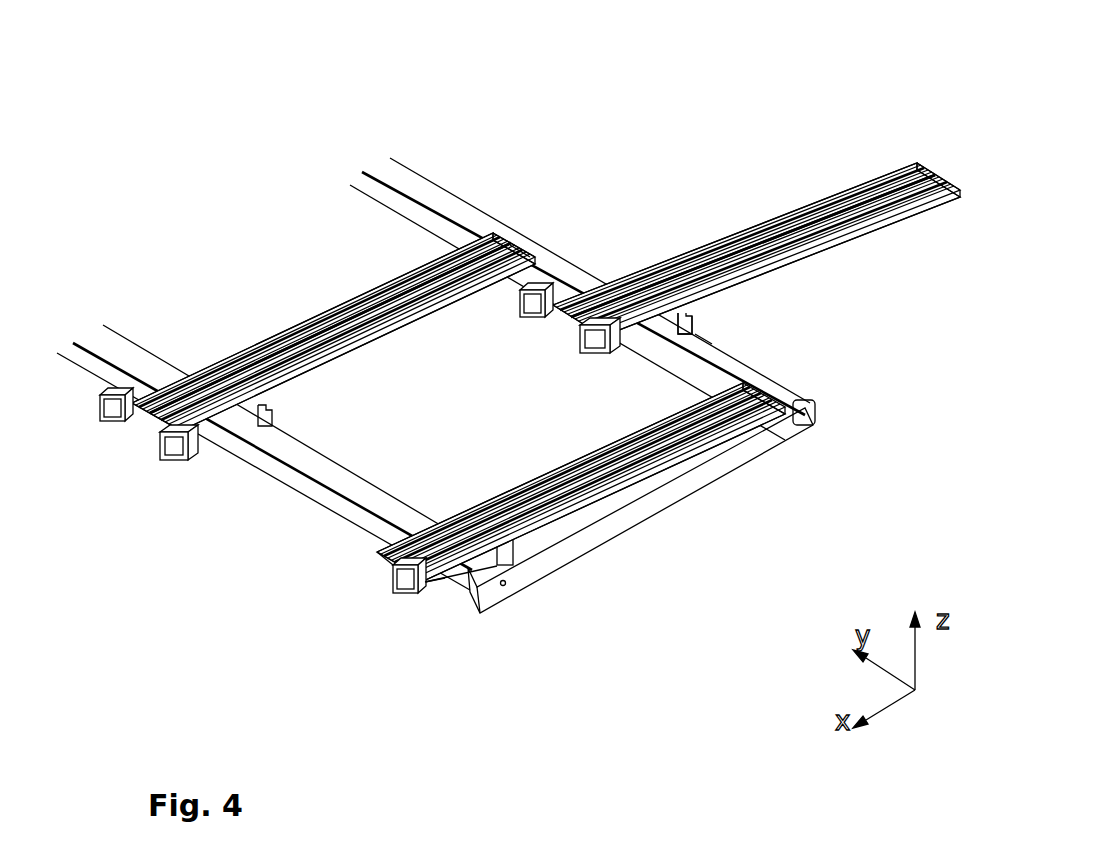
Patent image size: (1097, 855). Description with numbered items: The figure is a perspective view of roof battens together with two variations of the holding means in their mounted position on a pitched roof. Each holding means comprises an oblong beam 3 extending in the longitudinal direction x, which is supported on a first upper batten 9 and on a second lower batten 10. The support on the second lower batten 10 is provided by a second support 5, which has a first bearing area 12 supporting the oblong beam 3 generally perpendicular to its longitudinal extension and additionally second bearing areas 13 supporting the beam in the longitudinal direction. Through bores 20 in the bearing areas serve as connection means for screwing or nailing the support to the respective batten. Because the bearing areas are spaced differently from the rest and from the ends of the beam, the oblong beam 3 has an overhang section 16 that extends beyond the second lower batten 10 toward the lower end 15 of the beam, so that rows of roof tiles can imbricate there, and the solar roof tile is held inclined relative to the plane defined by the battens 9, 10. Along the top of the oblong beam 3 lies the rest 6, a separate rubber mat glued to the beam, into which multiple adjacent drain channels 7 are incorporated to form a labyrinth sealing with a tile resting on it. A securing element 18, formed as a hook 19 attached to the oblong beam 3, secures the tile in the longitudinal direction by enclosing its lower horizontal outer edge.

The oblong beam 3 is at (687, 468).
The second support 5 is at (258, 422).
The rest 6 is at (214, 357).
The drain channel 7 is at (305, 340).
The first upper batten 9 is at (425, 200).
The second lower batten 10 is at (297, 482).
The first bearing area 12 is at (508, 226).
The second bearing area 13 is at (720, 341).
The lower end 15 is at (356, 578).
The overhang section 16 is at (431, 598).
The securing element 18 is at (375, 605).
The hook 19 is at (102, 417).
The bore 20 is at (527, 237).